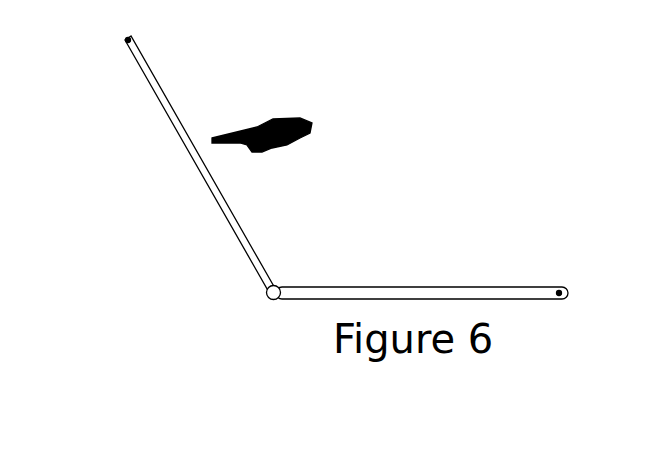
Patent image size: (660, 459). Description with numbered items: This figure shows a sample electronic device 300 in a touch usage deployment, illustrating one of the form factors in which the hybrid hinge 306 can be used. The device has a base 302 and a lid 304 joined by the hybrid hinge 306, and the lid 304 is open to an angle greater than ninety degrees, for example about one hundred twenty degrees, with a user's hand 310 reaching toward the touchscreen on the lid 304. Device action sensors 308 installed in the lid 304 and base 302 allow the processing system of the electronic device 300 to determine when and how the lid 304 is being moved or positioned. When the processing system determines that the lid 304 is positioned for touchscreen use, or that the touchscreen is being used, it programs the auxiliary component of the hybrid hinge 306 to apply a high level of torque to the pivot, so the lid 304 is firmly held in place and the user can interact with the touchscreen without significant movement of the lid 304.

The electronic device 300 is at (470, 84).
The base 302 is at (362, 288).
The lid 304 is at (230, 222).
The hybrid hinge 306 is at (267, 301).
The device action sensors 308 is at (123, 37).
The hand / pointer 310 is at (279, 114).